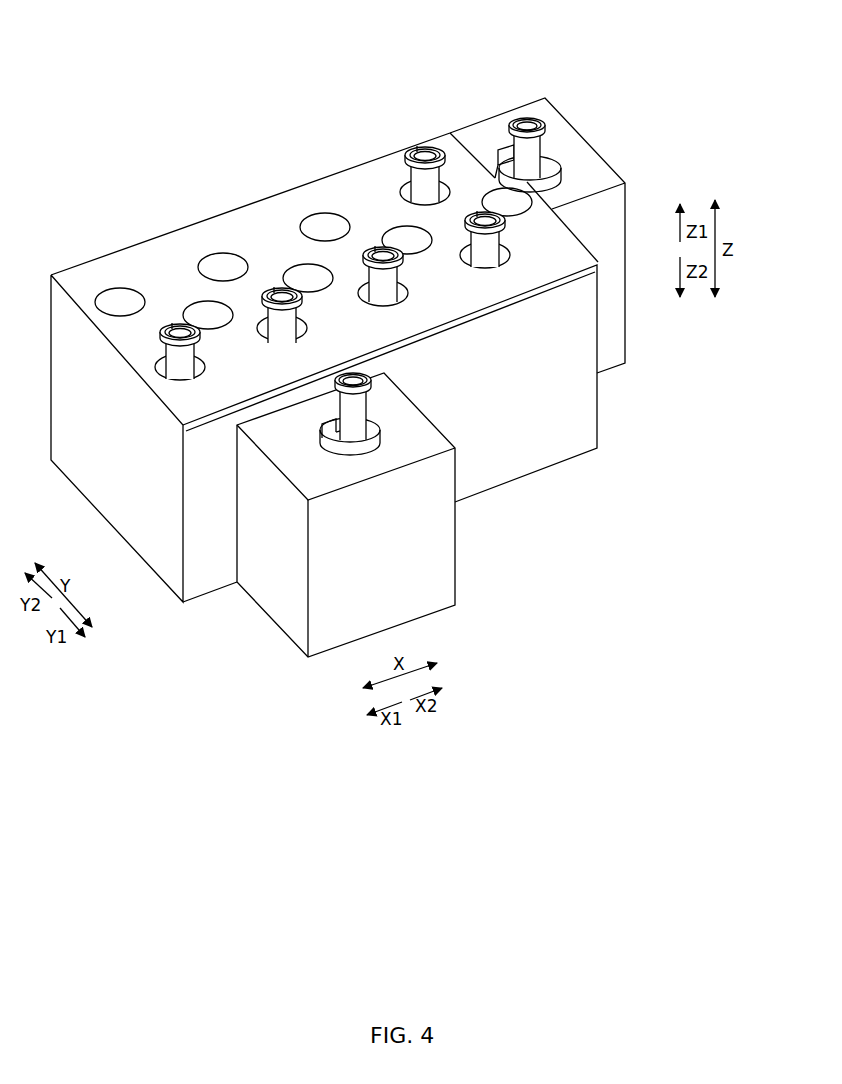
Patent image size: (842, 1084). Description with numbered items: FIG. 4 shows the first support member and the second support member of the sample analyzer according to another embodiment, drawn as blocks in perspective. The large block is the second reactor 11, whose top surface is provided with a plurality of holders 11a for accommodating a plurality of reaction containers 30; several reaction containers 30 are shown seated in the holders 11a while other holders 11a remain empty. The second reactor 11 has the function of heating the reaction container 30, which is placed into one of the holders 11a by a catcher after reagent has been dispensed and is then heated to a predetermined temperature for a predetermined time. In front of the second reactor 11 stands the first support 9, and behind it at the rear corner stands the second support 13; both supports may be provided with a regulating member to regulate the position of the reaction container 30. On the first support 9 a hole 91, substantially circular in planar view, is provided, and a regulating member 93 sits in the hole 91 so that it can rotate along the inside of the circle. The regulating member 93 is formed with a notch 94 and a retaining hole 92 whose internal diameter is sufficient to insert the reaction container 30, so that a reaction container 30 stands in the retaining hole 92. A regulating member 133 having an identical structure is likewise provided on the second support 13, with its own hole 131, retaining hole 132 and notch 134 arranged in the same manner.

The first support 9 is at (446, 372).
The second reactor 11 is at (76, 272).
The holders 11a is at (236, 270).
The second support 13 is at (592, 70).
The reaction container 30 is at (268, 290).
The hole 91 is at (386, 432).
The retaining hole 92 is at (368, 385).
The regulating member 93 is at (322, 430).
The notch 94 is at (344, 428).
The pedestal ring of block 13 131 is at (556, 172).
The connector terminal on block 13 132 is at (546, 140).
The regulating member 133 is at (506, 148).
The cutout of pedestal ring 131 134 is at (494, 160).